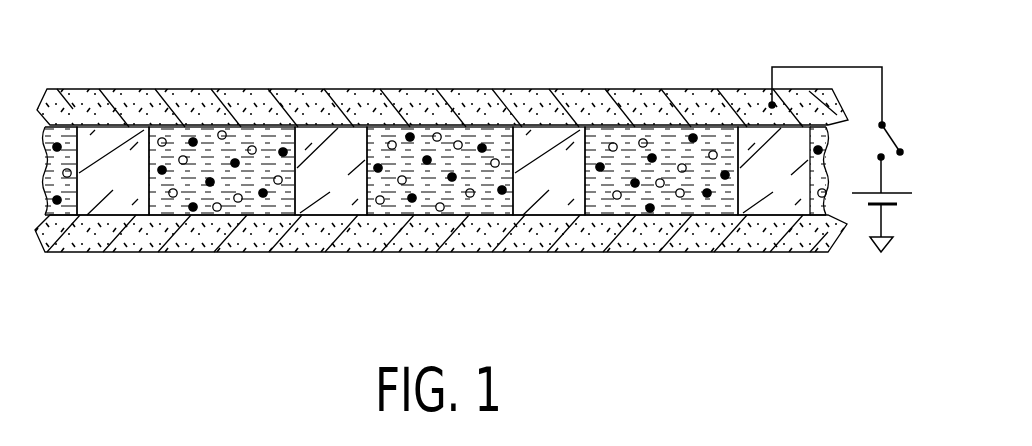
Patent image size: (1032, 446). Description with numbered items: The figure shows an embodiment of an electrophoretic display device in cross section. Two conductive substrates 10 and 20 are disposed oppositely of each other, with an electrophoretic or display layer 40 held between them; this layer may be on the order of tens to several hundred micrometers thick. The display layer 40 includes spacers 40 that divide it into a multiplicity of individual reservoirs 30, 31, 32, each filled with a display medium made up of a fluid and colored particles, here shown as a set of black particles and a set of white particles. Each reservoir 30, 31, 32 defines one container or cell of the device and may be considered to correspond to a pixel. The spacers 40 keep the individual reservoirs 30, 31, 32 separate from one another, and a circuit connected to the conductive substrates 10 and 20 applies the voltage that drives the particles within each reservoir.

The conductive substrate 10 is at (118, 252).
The conductive substrate 20 is at (137, 88).
The reservoir 30 is at (228, 184).
The reservoir 31 is at (427, 180).
The reservoir 32 is at (640, 182).
The display layer / spacers 40 is at (127, 186).